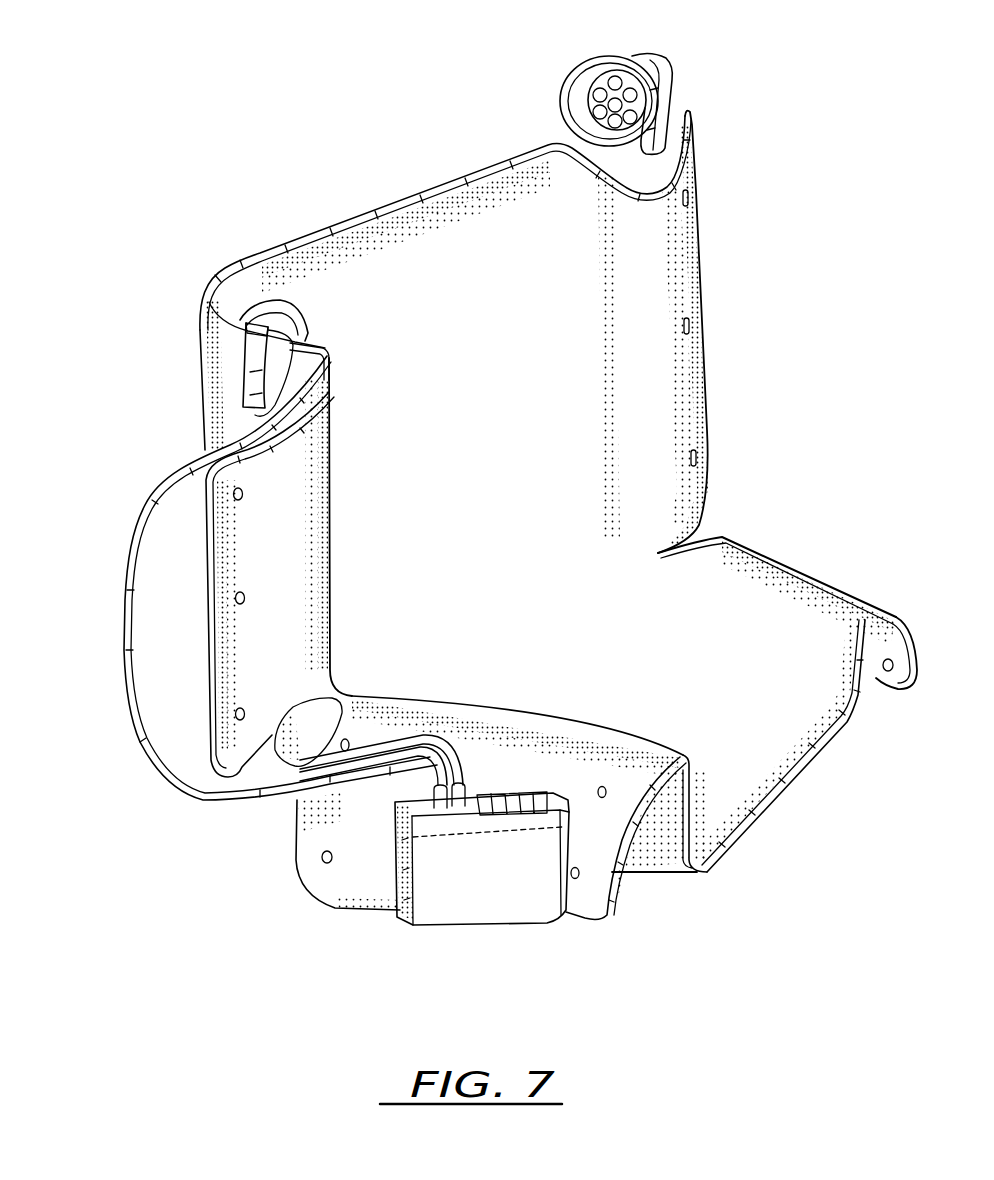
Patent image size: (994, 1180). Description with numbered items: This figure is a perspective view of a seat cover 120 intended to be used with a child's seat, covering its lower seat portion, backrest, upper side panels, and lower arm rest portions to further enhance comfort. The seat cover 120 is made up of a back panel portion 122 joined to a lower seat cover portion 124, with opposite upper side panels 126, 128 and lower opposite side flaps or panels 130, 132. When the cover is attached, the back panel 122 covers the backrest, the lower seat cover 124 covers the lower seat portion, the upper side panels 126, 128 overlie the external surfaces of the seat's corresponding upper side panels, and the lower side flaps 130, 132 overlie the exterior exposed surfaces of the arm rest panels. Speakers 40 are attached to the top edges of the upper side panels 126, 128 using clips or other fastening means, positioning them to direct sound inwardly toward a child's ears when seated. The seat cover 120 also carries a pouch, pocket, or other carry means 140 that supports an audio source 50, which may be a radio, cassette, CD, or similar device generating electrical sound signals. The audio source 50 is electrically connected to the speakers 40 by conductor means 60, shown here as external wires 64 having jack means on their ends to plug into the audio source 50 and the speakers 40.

The speakers 40 is at (614, 62).
The audio source 50 is at (428, 810).
The conductor means 60 is at (110, 631).
The external wires 64 is at (133, 738).
The seat cover 120 is at (403, 232).
The back panel portion 122 is at (488, 210).
The lower seat cover portion 124 is at (778, 768).
The upper side panel 126 is at (215, 618).
The upper side panel 128 is at (688, 284).
The lower side flap 130 is at (598, 922).
The lower side flap 132 is at (825, 590).
The carry means 140 is at (463, 907).